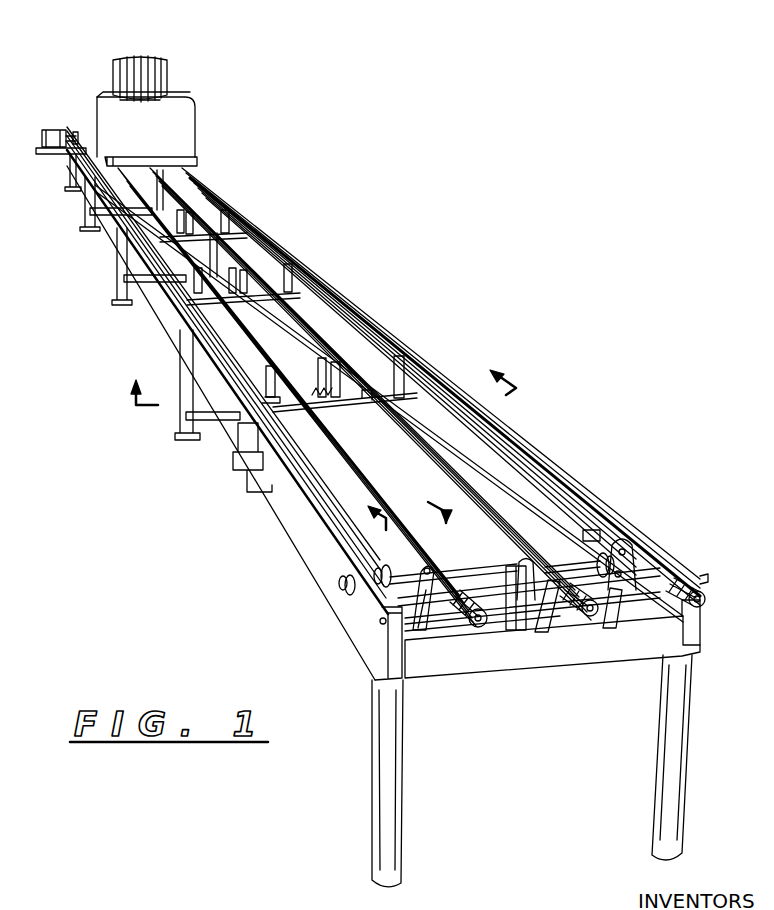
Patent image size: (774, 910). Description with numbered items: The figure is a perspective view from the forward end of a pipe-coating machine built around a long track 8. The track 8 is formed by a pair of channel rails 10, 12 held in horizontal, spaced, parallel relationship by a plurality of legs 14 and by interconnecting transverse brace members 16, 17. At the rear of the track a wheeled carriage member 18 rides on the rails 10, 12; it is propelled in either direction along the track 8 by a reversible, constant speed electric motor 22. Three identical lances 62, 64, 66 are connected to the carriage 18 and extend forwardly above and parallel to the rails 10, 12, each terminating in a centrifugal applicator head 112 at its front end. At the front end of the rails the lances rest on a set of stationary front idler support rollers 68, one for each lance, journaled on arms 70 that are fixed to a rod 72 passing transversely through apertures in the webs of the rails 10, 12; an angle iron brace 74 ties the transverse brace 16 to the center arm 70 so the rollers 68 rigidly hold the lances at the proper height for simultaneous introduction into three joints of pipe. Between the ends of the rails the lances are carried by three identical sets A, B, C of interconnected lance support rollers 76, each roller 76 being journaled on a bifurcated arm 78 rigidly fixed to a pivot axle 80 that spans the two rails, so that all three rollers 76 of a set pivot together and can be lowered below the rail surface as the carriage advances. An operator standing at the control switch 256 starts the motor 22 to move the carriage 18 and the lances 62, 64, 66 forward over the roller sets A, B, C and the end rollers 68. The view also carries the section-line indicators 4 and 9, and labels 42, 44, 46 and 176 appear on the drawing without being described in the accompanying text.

The track 8 is at (170, 327).
The channel rail 10 is at (317, 553).
The channel rail 12 is at (493, 420).
The legs 14 is at (84, 190).
The transverse brace member 16 is at (200, 242).
The transverse brace member 17 is at (108, 216).
The carriage member 18 is at (190, 128).
The electric motor 22 is at (50, 128).
The bearing disc 42 is at (389, 565).
The sprocket assembly 44 is at (605, 552).
The shaft 46 is at (484, 573).
The lance 62 is at (373, 487).
The lance 64 is at (450, 473).
The lance 66 is at (563, 487).
The front idler support roller 68 is at (620, 543).
The arm 70 is at (435, 636).
The rod 72 is at (380, 622).
The angle iron brace 74 is at (517, 630).
The lance support roller 76 is at (290, 262).
The bifurcated arm 78 is at (187, 290).
The pivot axle 80 is at (366, 402).
The centrifugal applicator head 112 is at (478, 630).
The drive motor 176 is at (148, 60).
The control switch 256 is at (235, 465).
The set of lance support rollers A is at (242, 199).
The set of lance support rollers B is at (307, 257).
The set of lance support rollers C is at (417, 353).
The section line 4 is at (319, 376).
The section line 9 is at (410, 518).